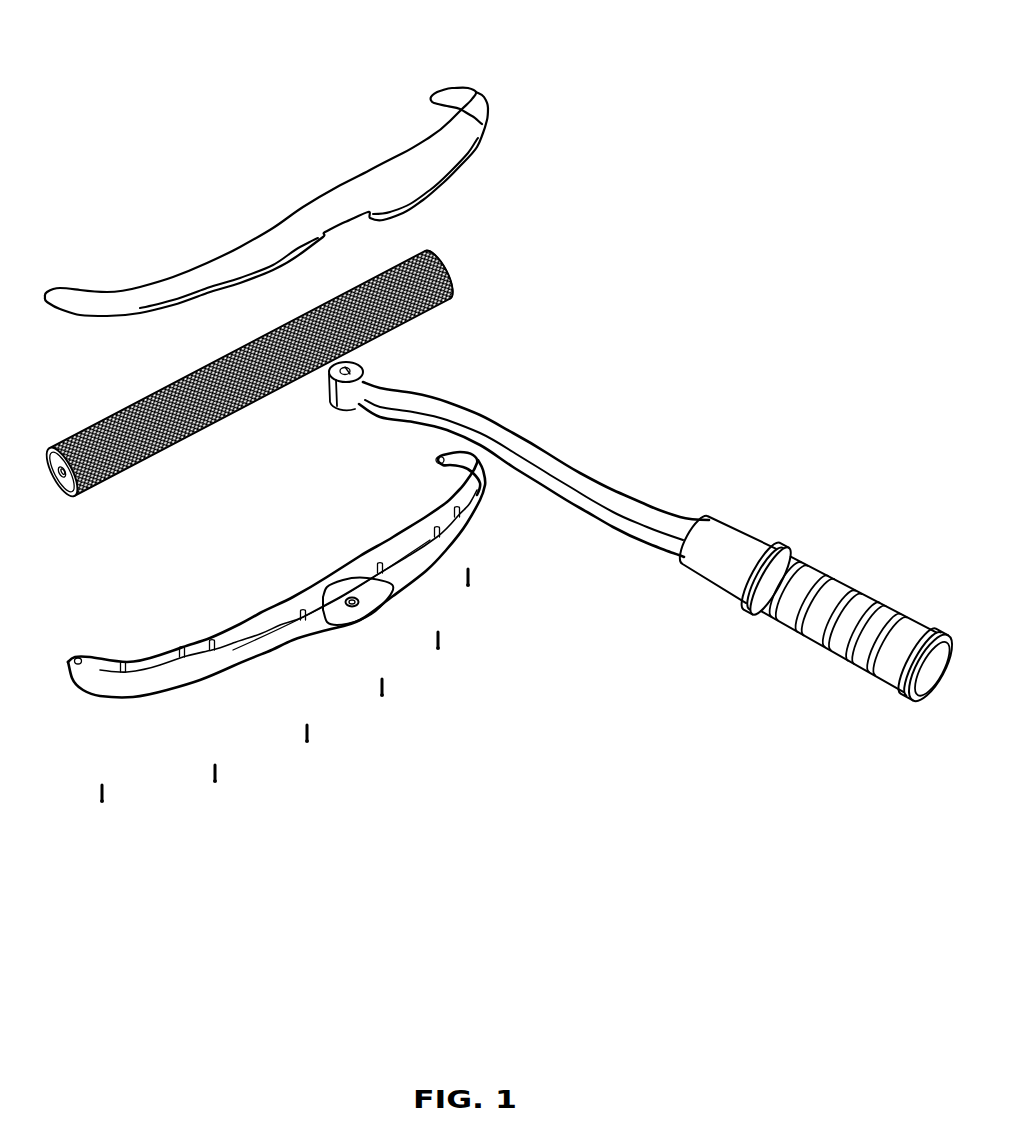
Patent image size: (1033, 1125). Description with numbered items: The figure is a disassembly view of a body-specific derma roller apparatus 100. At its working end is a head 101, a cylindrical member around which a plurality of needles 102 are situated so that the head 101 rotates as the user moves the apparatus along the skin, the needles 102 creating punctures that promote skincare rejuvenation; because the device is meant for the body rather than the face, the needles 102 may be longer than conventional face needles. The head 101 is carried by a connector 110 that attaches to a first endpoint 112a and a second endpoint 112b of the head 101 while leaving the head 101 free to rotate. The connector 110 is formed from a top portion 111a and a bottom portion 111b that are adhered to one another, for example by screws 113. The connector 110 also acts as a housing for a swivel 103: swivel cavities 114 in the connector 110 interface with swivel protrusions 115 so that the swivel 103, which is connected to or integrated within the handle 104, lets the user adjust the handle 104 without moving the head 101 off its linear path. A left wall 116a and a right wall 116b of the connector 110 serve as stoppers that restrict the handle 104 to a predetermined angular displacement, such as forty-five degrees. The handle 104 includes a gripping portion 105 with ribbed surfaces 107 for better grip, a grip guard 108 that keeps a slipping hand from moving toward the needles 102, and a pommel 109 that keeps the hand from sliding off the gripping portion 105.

The body-specific derma roller apparatus 100 is at (810, 82).
The head 101 is at (440, 242).
The plurality of needles 102 is at (253, 371).
The swivel 103 is at (365, 366).
The handle 104 is at (775, 458).
The gripping portion 105 is at (723, 555).
The ribbed surfaces 107 is at (848, 623).
The grip guard 108 is at (766, 578).
The pommel 109 is at (926, 665).
The connector 110 is at (400, 128).
The top portion 111a is at (180, 278).
The bottom portion 111b is at (253, 620).
The first endpoint 112a is at (62, 472).
The second endpoint 112b is at (442, 272).
The screws 113 is at (383, 687).
The swivel cavities 114 is at (350, 597).
The swivel protrusions 115 is at (328, 385).
The left wall 116a is at (325, 239).
The right wall 116b is at (378, 212).